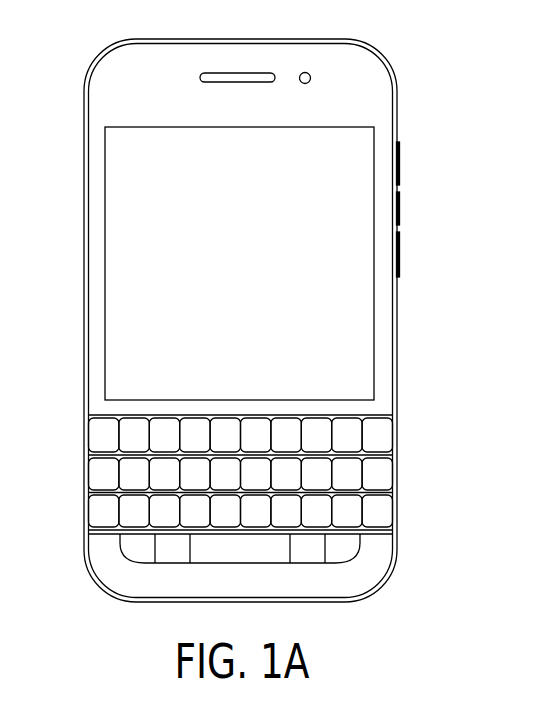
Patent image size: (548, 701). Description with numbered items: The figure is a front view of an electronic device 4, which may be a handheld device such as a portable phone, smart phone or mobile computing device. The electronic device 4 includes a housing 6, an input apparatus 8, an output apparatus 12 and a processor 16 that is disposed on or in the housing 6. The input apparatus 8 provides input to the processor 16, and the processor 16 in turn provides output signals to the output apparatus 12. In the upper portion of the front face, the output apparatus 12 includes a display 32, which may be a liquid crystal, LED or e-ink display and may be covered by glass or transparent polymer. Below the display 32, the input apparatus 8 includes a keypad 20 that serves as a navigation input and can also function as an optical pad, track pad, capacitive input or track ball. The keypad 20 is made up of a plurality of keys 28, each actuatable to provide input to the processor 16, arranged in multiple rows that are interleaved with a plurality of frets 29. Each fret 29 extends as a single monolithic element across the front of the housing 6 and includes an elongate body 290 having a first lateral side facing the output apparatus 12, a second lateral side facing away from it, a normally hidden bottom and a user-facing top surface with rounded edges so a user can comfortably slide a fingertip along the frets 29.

The electronic device 4 is at (395, 58).
The housing 6 is at (383, 131).
The input apparatus 8 is at (246, 460).
The output apparatus 12 is at (343, 317).
The processor 16 is at (339, 118).
The keypad 20 is at (375, 516).
The keys 28 is at (99, 433).
The frets 29 is at (393, 533).
The display 32 is at (244, 272).
The elongate body 290 is at (360, 534).